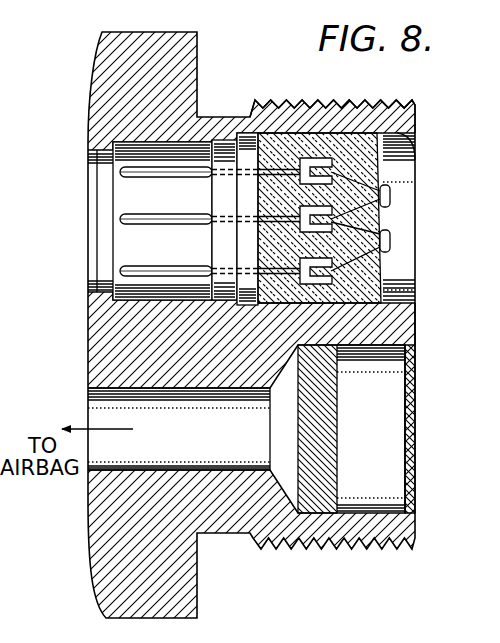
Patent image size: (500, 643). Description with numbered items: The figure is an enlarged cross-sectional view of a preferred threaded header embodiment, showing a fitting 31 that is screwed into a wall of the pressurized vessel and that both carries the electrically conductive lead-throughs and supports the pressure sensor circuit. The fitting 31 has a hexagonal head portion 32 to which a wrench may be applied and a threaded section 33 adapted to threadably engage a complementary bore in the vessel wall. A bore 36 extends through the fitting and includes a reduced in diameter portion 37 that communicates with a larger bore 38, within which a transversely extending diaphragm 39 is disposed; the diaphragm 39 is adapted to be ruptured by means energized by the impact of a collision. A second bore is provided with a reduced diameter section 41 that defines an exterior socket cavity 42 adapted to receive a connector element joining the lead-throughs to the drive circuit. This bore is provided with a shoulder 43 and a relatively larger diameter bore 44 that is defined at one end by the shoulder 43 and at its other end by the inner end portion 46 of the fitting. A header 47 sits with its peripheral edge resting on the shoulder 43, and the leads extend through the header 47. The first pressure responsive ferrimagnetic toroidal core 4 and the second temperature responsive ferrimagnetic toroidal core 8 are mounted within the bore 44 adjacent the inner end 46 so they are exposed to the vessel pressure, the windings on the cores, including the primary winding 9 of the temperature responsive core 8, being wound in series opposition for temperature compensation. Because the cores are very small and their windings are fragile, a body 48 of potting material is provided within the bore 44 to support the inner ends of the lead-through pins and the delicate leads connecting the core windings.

The hexagonal head portion 32 is at (117, 32).
The fitting 31 is at (316, 95).
The threaded section 33 is at (398, 101).
The inner end portion 46 is at (415, 118).
The primary winding 9 is at (432, 316).
The reduced diameter section 41 is at (110, 147).
The exterior socket cavity 42 is at (127, 196).
The header 47 is at (247, 243).
The shoulder 43 is at (243, 133).
The body of potting material 48 is at (367, 281).
The first pressure responsive ferrimagnetic toroidal core 4 is at (390, 197).
The second temperature responsive ferrimagnetic toroidal core 8 is at (390, 241).
The larger diameter bore 44 is at (397, 135).
The bore 36 is at (120, 417).
The reduced in diameter portion 37 is at (197, 470).
The larger bore 38 is at (383, 347).
The diaphragm 39 is at (323, 427).